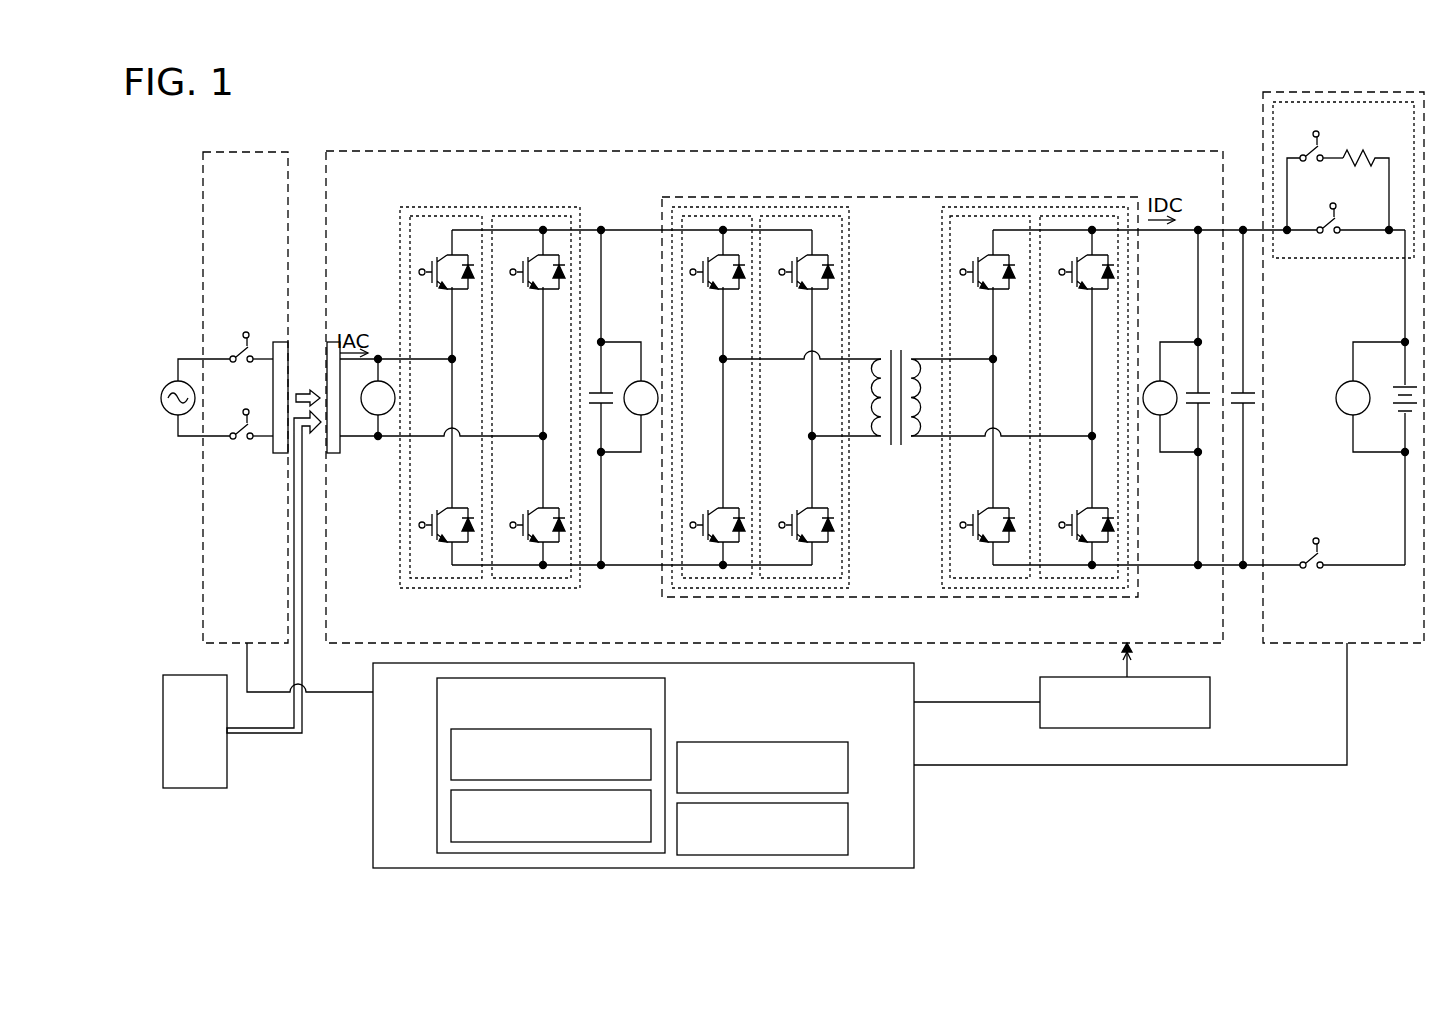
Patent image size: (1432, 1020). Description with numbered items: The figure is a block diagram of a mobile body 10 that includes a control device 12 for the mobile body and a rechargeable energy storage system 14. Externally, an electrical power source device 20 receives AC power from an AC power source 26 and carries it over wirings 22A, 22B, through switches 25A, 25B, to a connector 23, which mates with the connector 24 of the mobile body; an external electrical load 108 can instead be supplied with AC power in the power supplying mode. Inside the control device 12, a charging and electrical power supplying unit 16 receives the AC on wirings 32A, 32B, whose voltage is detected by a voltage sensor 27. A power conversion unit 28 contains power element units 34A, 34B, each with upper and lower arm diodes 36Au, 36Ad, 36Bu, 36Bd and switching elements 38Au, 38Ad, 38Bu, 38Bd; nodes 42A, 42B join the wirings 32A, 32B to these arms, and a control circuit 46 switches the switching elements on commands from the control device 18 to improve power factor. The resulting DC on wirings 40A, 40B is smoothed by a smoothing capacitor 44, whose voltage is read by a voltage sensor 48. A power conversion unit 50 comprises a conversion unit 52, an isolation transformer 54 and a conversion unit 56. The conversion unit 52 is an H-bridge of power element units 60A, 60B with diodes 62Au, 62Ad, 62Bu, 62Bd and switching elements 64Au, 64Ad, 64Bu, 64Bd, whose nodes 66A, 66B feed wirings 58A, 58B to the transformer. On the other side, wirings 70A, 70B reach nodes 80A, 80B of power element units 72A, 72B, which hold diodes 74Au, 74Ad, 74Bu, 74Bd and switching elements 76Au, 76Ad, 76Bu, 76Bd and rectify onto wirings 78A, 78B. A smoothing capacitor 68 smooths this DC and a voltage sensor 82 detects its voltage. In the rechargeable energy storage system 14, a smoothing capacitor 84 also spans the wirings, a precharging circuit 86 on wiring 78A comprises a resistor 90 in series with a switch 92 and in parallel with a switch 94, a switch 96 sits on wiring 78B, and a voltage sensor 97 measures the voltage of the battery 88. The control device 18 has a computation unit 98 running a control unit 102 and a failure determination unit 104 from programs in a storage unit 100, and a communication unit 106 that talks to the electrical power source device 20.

The mobile body 10 is at (988, 93).
The control device for the mobile body 12 is at (1010, 790).
The rechargeable energy storage system 14 is at (1300, 90).
The charging and electrical power supplying unit 16 is at (1150, 151).
The control device 18 is at (914, 680).
The electrical power source device 20 is at (268, 152).
The wiring 22A is at (221, 362).
The wiring 22B is at (221, 440).
The connector 23 is at (288, 354).
The connector 24 is at (333, 455).
The switch 25A is at (229, 350).
The switch 25B is at (250, 452).
The AC power source 26 is at (170, 424).
The voltage sensor 27 is at (379, 420).
The power conversion unit 28 is at (490, 207).
The wiring 32A is at (429, 357).
The wiring 32B is at (432, 440).
The power element unit 34A is at (438, 216).
The power element unit 34B is at (548, 216).
The diode 36Au is at (466, 252).
The diode 36Ad is at (466, 546).
The diode 36Bu is at (559, 252).
The diode 36Bd is at (559, 546).
The switching element 38Au is at (410, 252).
The switching element 38Ad is at (424, 546).
The switching element 38Bu is at (520, 252).
The switching element 38Bd is at (520, 546).
The wiring 40A is at (628, 228).
The wiring 40B is at (628, 567).
The node 42A is at (448, 366).
The node 42B is at (541, 428).
The smoothing capacitor 44 is at (612, 418).
The control circuit 46 is at (1210, 696).
The voltage sensor 48 is at (642, 378).
The power conversion unit 50 is at (905, 197).
The conversion unit 52 is at (765, 207).
The isolation transformer 54 is at (894, 348).
The conversion unit 56 is at (1038, 207).
The wiring 58A is at (858, 358).
The wiring 58B is at (860, 440).
The power element unit 60A is at (708, 216).
The power element unit 60B is at (818, 216).
The diode 62Au is at (739, 252).
The diode 62Ad is at (738, 546).
The diode 62Bu is at (829, 252).
The diode 62Bd is at (829, 546).
The switching element 64Au is at (695, 252).
The switching element 64Ad is at (702, 546).
The switching element 64Bu is at (785, 252).
The switching element 64Bd is at (792, 546).
The node 66A is at (716, 366).
The node 66B is at (808, 443).
The smoothing capacitor 68 is at (1190, 412).
The wiring 70A is at (931, 358).
The wiring 70B is at (931, 440).
The power element unit 72A is at (978, 216).
The power element unit 72B is at (1100, 216).
The diode 74Au is at (1009, 252).
The diode 74Ad is at (1009, 546).
The diode 74Bu is at (1109, 252).
The diode 74Bd is at (1109, 546).
The switching element 76Au is at (965, 252).
The switching element 76Ad is at (970, 546).
The switching element 76Bu is at (1064, 252).
The switching element 76Bd is at (1069, 546).
The wiring 78A is at (1211, 228).
The wiring 78B is at (1212, 567).
The node 80A is at (985, 350).
The node 80B is at (1085, 427).
The voltage sensor 82 is at (1151, 380).
The smoothing capacitor 84 is at (1249, 416).
The precharging circuit 86 is at (1404, 102).
The battery 88 is at (1393, 424).
The resistor 90 is at (1361, 150).
The switch 92 is at (1296, 142).
The switch 94 is at (1329, 240).
The switch 96 is at (1322, 575).
The voltage sensor 97 is at (1342, 385).
The computation unit 98 is at (437, 699).
The storage unit 100 is at (848, 757).
The control unit 102 is at (451, 748).
The failure determination unit 104 is at (451, 807).
The communication unit 106 is at (848, 817).
The electrical load 108 is at (227, 764).